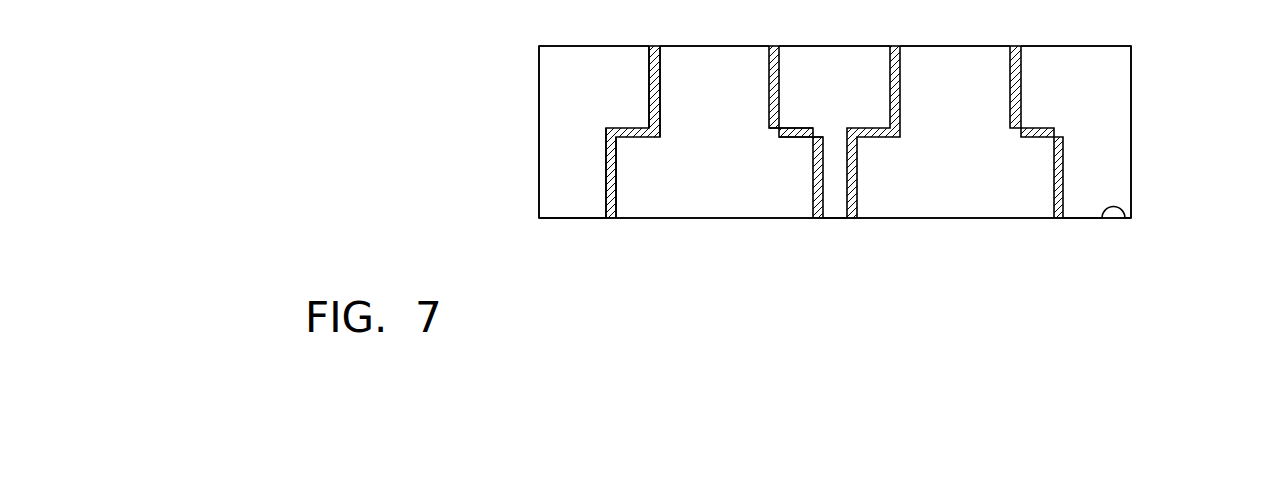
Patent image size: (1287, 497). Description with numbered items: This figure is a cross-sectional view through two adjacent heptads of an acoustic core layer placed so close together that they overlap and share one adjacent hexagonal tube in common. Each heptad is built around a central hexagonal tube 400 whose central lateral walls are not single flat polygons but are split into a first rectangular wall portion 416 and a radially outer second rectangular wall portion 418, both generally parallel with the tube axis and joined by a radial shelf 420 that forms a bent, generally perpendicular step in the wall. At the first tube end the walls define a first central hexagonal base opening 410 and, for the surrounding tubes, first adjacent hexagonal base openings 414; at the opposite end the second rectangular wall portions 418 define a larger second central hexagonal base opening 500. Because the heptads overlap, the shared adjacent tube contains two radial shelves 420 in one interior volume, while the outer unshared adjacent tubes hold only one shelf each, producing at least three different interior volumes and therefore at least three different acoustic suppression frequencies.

The central hexagonal tube 400 is at (630, 187).
The first central hexagonal base opening 410 is at (685, 46).
The first adjacent hexagonal base opening 414 is at (592, 46).
The first rectangular wall portion 416 is at (648, 92).
The second rectangular wall portion 418 is at (607, 180).
The radial shelf 420 is at (783, 138).
The second central hexagonal base opening 500 is at (665, 219).